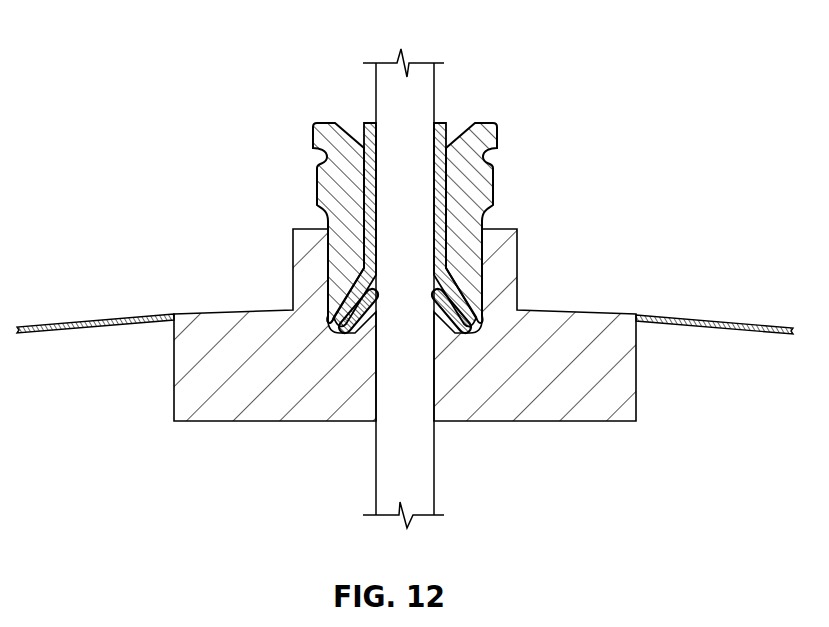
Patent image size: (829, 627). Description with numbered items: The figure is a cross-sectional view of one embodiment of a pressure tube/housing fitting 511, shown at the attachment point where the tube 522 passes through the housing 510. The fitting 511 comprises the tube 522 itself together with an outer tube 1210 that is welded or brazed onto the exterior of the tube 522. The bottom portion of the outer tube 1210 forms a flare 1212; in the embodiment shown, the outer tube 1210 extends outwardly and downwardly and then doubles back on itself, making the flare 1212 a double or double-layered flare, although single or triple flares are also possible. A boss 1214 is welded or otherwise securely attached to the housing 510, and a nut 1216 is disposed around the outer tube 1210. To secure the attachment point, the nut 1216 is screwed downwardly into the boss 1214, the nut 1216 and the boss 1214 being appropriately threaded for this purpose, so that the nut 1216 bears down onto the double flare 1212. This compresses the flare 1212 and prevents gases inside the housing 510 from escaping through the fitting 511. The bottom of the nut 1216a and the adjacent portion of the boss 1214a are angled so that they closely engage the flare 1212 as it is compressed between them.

The fitting 511 is at (141, 55).
The tube 522 is at (434, 87).
The housing 510 is at (719, 318).
The outer tube 1210 is at (443, 190).
The flare 1212 is at (480, 310).
The boss 1214 is at (571, 384).
The portion of the boss 1214a is at (357, 333).
The nut 1216 is at (326, 183).
The bottom of the nut 1216a is at (340, 310).